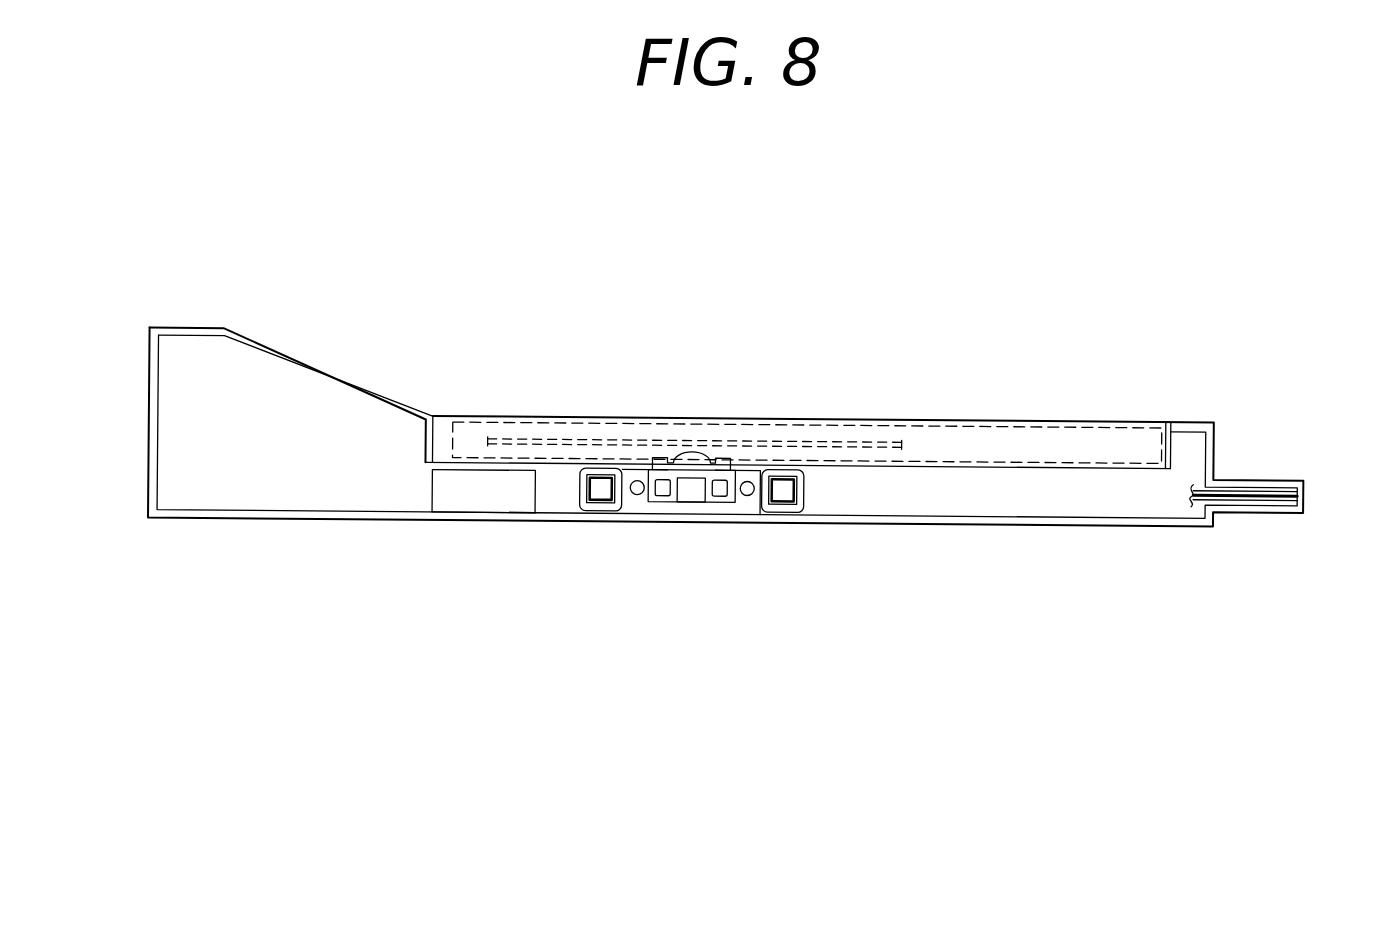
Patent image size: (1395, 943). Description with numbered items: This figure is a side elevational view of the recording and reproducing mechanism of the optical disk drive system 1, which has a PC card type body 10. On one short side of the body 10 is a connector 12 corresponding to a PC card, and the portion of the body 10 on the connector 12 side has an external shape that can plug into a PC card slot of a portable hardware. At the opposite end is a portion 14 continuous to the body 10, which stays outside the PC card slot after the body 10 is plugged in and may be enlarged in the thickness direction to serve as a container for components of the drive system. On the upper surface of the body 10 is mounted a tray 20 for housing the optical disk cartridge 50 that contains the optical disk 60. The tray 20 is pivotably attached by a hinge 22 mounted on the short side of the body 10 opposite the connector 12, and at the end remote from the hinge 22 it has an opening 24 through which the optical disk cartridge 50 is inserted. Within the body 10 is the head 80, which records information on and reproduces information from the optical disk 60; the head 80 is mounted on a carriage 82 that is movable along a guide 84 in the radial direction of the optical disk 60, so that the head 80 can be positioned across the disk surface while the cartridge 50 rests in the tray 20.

The optical disk drive system 1 is at (1168, 295).
The body 10 is at (1032, 526).
The connector 12 is at (1303, 496).
The portion 14 is at (295, 494).
The tray 20 is at (1083, 418).
The hinge 22 is at (436, 440).
The opening 24 is at (1172, 451).
The optical disk cartridge 50 is at (977, 440).
The optical disk 60 is at (834, 440).
The head 80 is at (692, 452).
The carriage 82 is at (640, 505).
The guide 84 is at (600, 504).